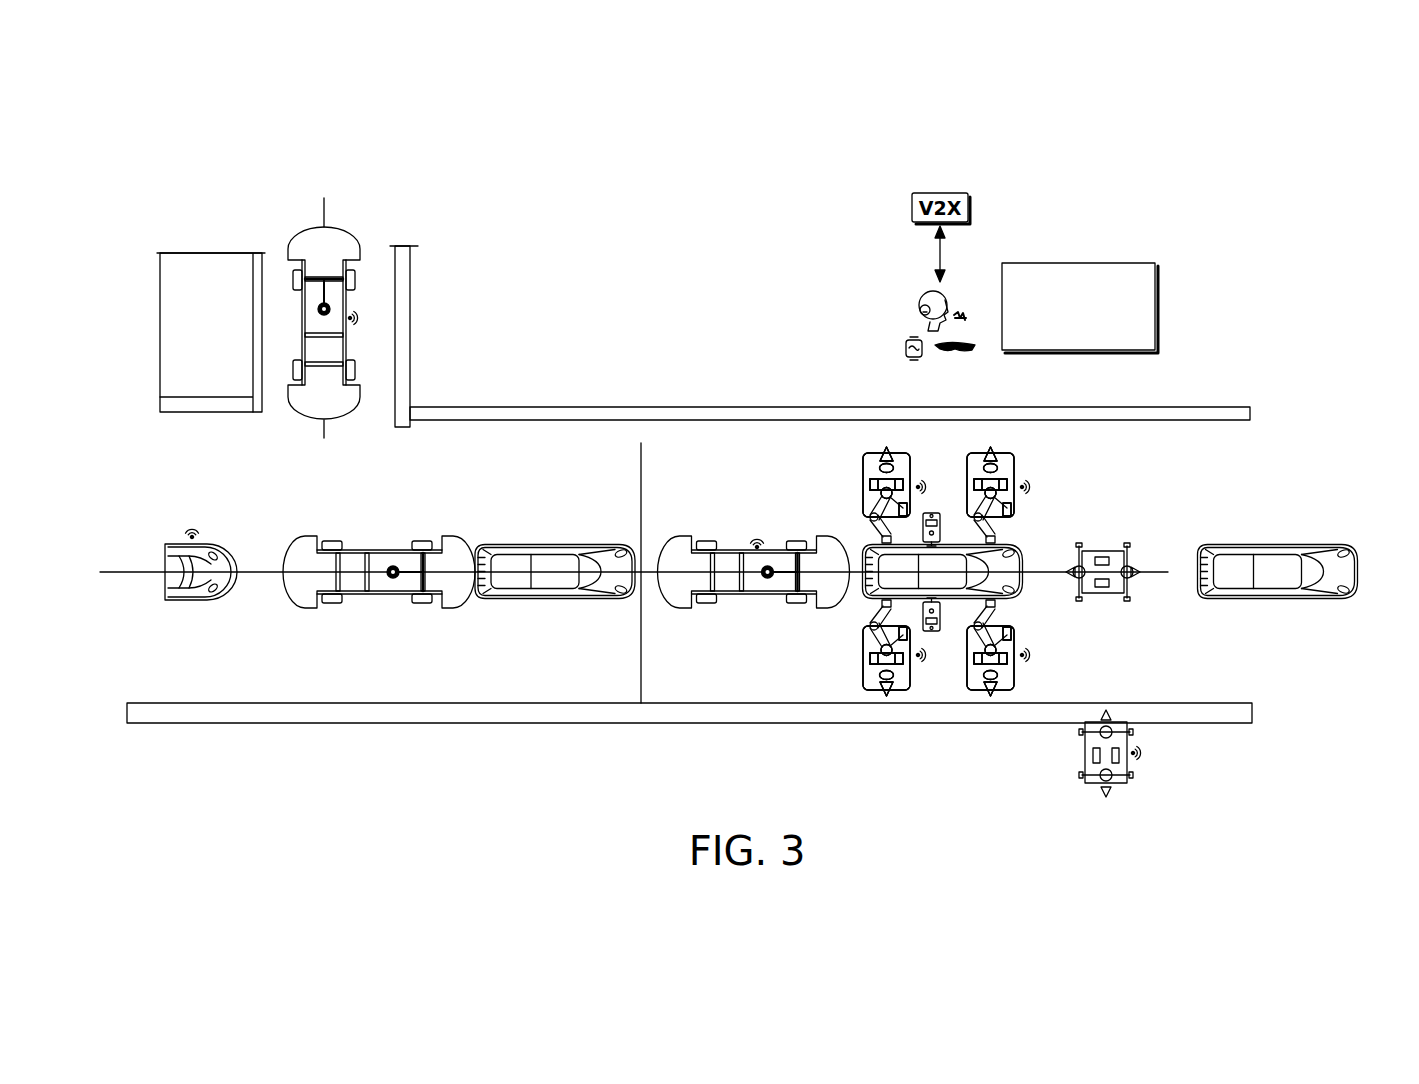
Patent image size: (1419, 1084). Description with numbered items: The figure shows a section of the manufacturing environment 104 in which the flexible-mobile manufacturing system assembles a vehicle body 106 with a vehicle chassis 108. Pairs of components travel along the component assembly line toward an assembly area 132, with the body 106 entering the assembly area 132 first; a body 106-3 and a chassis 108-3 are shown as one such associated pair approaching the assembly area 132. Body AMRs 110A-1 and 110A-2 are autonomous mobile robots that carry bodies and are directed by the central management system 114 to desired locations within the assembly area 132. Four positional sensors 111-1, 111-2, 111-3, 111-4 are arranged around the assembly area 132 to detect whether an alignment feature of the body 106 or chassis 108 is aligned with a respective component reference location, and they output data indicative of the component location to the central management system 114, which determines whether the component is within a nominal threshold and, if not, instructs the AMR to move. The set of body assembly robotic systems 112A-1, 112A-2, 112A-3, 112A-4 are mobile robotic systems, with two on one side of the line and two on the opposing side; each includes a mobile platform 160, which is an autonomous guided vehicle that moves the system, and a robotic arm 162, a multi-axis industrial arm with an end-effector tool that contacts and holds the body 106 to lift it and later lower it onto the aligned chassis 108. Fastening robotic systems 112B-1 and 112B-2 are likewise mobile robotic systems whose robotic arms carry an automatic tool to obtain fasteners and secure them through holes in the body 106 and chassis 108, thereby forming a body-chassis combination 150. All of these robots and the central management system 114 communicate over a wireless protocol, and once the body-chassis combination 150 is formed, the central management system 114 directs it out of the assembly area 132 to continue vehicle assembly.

The manufacturing environment 104 is at (226, 173).
The body 106 is at (178, 545).
The chassis 108 is at (338, 238).
The central management system 114 is at (1078, 263).
The assembly area 132 is at (1323, 459).
The body-chassis combination 150 is at (1289, 532).
The chassis 108-3 is at (755, 538).
The body 106-3 is at (875, 600).
The mobile platform 160 is at (865, 458).
The robotic arm 162 is at (877, 493).
The positional sensor 111-1 is at (893, 488).
The positional sensor 111-2 is at (990, 470).
The positional sensor 111-3 is at (1028, 655).
The positional sensor 111-4 is at (878, 660).
The mobile robotic system 112A-1 is at (863, 472).
The mobile robotic system 112A-2 is at (1013, 470).
The mobile robotic system 112A-3 is at (1005, 692).
The mobile robotic system 112A-4 is at (908, 692).
The mobile robotic system 112B-1 is at (928, 513).
The mobile robotic system 112B-2 is at (930, 632).
The autonomous mobile robot 110A-1 is at (1130, 768).
The autonomous mobile robot 110A-2 is at (1100, 550).